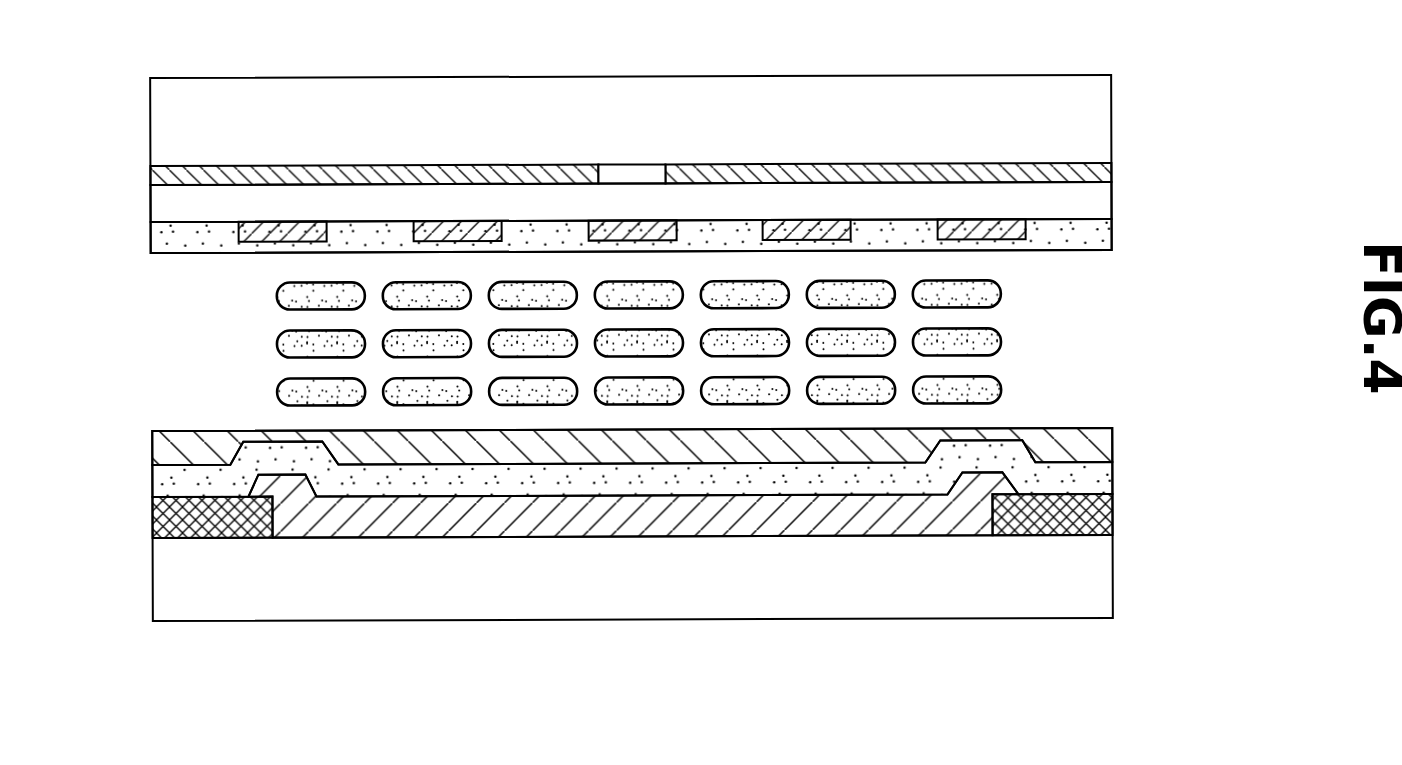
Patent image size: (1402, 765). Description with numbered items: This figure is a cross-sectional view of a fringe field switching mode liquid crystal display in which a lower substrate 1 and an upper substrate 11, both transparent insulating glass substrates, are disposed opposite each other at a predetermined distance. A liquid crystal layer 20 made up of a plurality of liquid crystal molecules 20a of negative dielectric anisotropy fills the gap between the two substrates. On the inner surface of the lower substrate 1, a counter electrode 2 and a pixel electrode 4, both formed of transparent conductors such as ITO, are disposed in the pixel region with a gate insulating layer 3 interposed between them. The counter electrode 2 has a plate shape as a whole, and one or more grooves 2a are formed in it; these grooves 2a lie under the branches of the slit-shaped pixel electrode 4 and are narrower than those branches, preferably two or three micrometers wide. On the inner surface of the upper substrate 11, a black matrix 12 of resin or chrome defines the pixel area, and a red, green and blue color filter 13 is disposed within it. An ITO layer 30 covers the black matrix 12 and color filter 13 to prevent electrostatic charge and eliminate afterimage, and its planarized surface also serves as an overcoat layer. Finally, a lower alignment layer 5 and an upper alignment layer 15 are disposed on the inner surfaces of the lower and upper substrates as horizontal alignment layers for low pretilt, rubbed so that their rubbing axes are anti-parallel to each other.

The lower substrate 1 is at (167, 118).
The counter electrode 2 is at (162, 170).
The groove 2a is at (637, 158).
The gate insulating layer 3 is at (167, 198).
The lower alignment layer 5 is at (160, 236).
The pixel electrode 4 is at (250, 243).
The liquid crystal layer 20 is at (533, 344).
The liquid crystal molecule 20a is at (258, 392).
The upper alignment layer 15 is at (172, 445).
The ITO layer 30 is at (170, 470).
The black matrix 12 is at (170, 520).
The color filter 13 is at (925, 538).
The upper substrate 11 is at (170, 573).